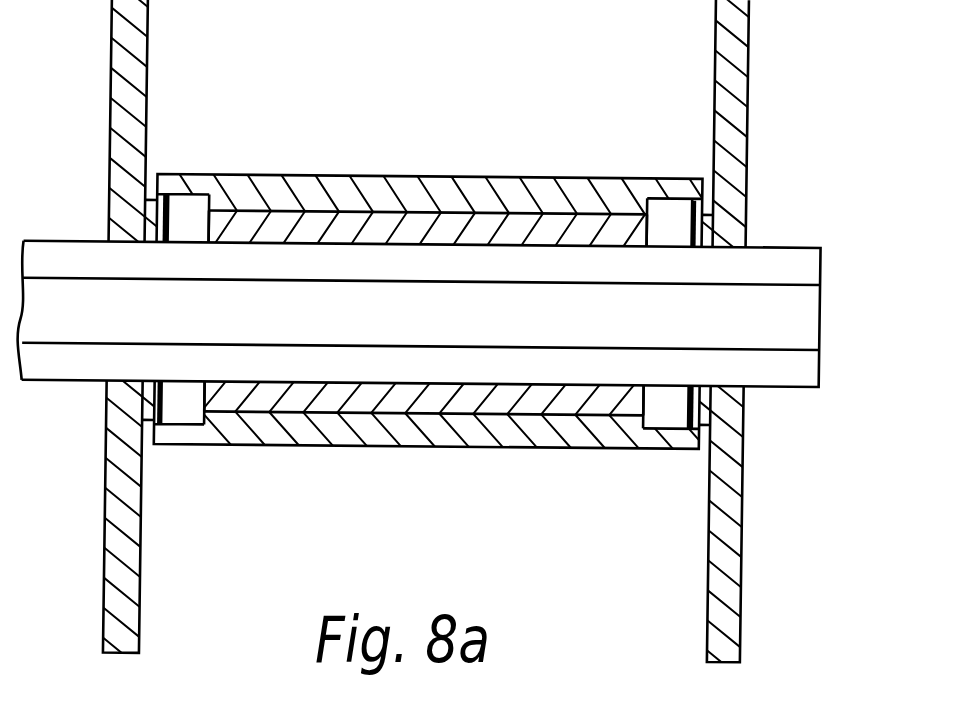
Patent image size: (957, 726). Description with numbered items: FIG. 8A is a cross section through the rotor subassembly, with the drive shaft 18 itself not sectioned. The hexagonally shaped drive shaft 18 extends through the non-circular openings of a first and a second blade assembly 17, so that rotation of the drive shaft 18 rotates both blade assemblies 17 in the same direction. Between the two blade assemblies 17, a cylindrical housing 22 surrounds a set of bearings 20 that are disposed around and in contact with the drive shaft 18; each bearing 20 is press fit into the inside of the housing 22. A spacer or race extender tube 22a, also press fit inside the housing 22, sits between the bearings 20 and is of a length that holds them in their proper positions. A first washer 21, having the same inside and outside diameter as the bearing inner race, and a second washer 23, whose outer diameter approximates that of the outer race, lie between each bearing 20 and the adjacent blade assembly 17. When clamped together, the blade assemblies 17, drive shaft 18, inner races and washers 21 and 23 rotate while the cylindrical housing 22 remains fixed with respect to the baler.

The blade assembly 17 is at (144, 42).
The drive shaft 18 is at (780, 251).
The bearing 20 is at (178, 208).
The first washer 21 is at (174, 387).
The cylindrical housing 22 is at (449, 184).
The race extender tube 22a is at (455, 392).
The second washer 23 is at (152, 172).